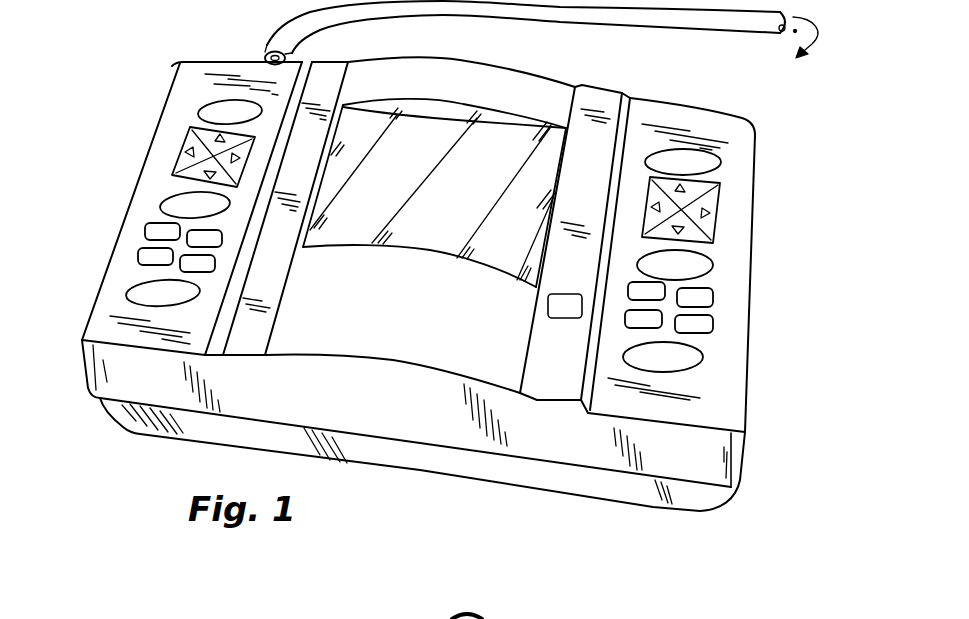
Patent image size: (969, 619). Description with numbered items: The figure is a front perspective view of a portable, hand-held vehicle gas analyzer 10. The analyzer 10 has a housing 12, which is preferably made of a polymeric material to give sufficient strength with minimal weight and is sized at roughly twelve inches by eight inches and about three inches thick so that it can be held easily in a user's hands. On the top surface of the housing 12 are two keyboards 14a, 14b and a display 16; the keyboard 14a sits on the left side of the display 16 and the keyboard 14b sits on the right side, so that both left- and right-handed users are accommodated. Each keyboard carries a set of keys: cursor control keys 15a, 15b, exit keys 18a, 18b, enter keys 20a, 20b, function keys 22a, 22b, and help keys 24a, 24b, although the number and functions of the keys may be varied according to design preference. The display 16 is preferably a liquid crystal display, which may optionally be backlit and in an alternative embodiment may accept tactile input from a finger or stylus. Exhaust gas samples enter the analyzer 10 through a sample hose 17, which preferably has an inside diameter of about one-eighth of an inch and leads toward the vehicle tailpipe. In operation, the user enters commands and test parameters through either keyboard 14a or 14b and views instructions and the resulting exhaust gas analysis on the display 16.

The vehicle gas analyzer 10 is at (657, 517).
The housing 12 is at (468, 442).
The keyboard 14a is at (196, 74).
The keyboard 14b is at (744, 126).
The cursor control keys 15a is at (184, 140).
The cursor control keys 15b is at (723, 208).
The display 16 is at (437, 225).
The sample hose 17 is at (618, 31).
The exit key 18a is at (203, 103).
The exit key 18b is at (721, 165).
The enter key 20a is at (162, 197).
The enter key 20b is at (713, 268).
The function keys 22a is at (139, 251).
The function keys 22b is at (715, 324).
The help key 24a is at (128, 292).
The help key 24b is at (703, 362).